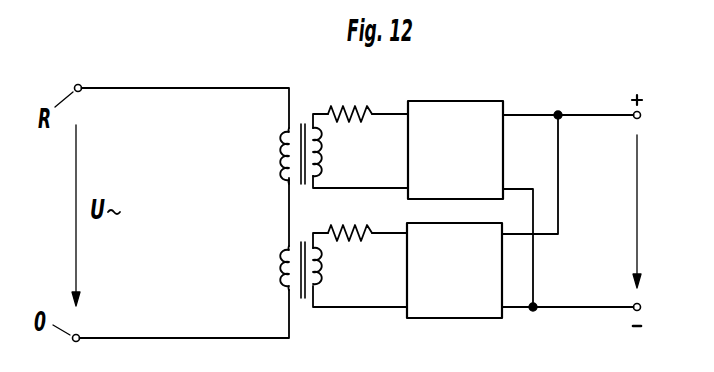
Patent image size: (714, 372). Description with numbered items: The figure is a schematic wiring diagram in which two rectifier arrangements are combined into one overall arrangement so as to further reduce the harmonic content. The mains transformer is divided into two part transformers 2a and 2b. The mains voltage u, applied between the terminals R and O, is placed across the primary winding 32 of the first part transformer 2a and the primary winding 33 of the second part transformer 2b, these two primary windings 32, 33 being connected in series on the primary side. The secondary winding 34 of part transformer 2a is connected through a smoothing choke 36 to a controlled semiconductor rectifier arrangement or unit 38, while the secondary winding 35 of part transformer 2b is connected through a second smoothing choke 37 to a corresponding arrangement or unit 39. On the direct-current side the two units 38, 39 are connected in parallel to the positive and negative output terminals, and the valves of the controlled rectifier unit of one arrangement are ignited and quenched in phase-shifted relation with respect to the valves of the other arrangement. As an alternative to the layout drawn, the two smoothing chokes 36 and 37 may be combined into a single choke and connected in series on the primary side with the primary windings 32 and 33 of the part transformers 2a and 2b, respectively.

The part transformer 2a is at (318, 217).
The part transformer 2b is at (318, 337).
The primary winding 32 is at (283, 151).
The primary winding 33 is at (283, 271).
The secondary winding 34 is at (318, 156).
The secondary winding 35 is at (318, 274).
The smoothing choke 36 is at (356, 103).
The smoothing choke 37 is at (356, 224).
The arrangement 38 is at (461, 110).
The arrangement 39 is at (457, 320).